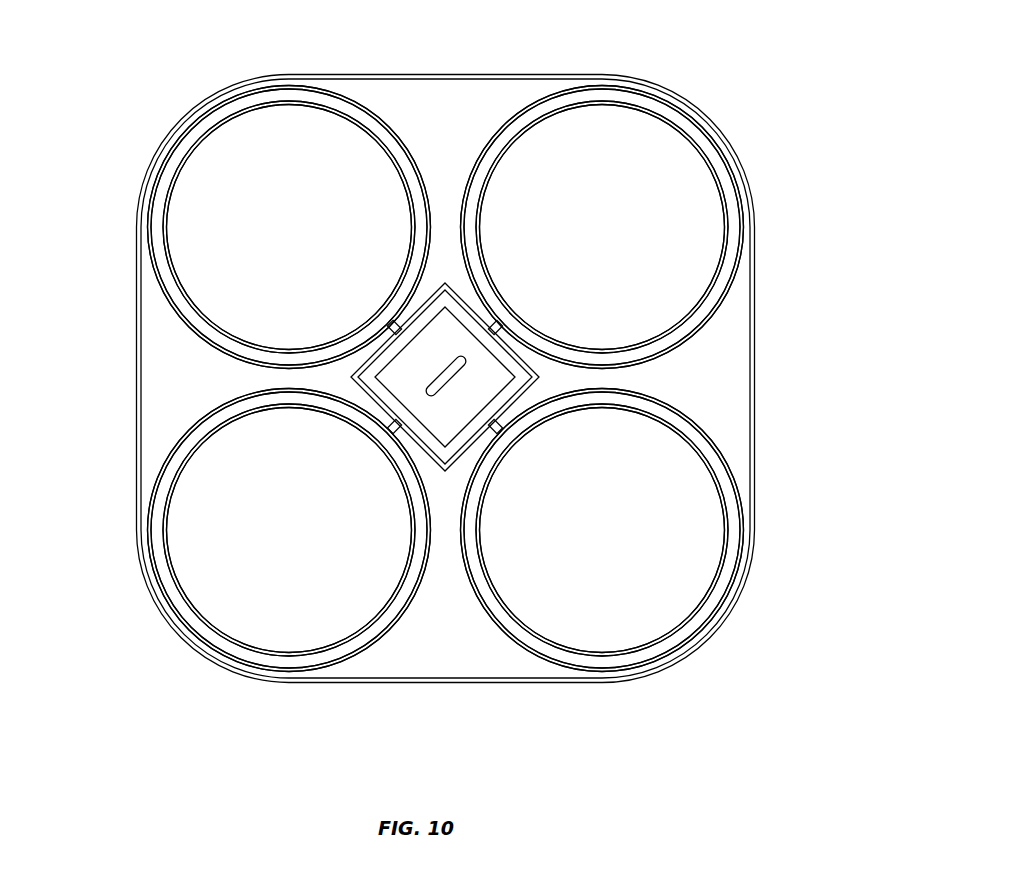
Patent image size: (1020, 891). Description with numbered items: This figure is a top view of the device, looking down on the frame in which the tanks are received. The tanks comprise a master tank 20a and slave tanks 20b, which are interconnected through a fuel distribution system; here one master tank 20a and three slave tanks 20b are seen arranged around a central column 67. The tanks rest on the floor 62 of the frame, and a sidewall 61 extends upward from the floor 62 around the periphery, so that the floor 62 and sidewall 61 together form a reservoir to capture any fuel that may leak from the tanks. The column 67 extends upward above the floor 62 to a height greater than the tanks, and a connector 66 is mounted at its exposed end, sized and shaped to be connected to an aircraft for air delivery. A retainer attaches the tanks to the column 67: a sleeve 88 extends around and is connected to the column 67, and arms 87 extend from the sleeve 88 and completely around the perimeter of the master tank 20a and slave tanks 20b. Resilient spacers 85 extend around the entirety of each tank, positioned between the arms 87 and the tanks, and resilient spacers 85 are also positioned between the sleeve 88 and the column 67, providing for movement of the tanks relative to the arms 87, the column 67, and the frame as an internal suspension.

The master tank 20a is at (200, 173).
The slave tank 20b is at (673, 172).
The sidewall 61 is at (755, 458).
The floor 62 is at (722, 415).
The connector 66 is at (383, 347).
The column 67 is at (442, 375).
The resilient spacers 85 is at (670, 113).
The arms 87 is at (363, 103).
The sleeve 88 is at (430, 462).